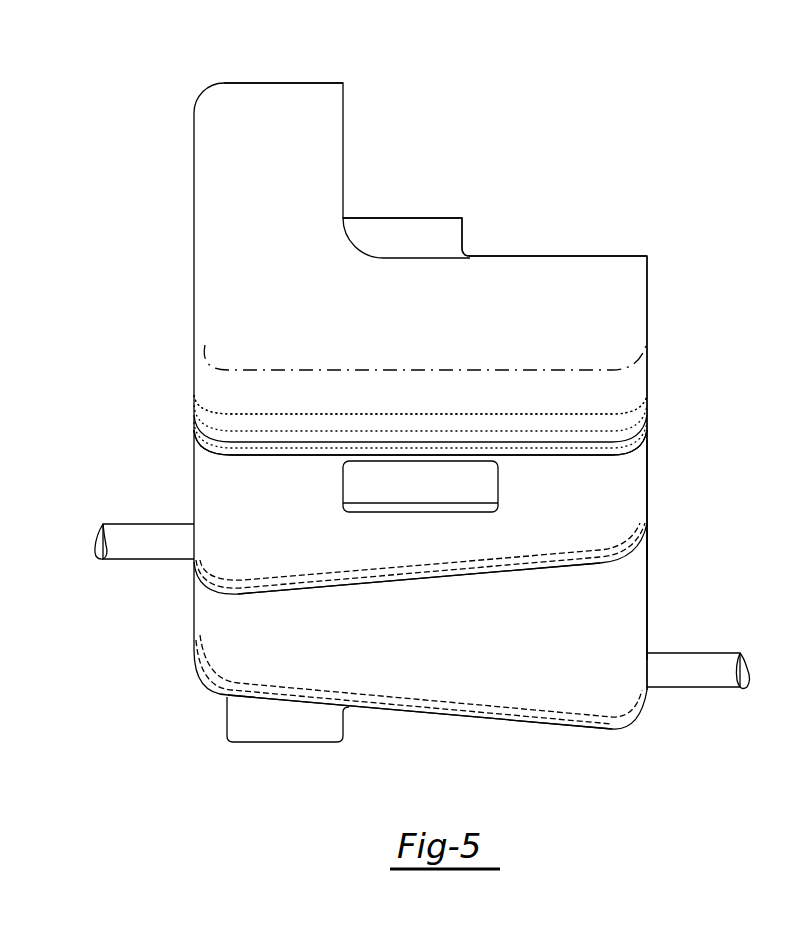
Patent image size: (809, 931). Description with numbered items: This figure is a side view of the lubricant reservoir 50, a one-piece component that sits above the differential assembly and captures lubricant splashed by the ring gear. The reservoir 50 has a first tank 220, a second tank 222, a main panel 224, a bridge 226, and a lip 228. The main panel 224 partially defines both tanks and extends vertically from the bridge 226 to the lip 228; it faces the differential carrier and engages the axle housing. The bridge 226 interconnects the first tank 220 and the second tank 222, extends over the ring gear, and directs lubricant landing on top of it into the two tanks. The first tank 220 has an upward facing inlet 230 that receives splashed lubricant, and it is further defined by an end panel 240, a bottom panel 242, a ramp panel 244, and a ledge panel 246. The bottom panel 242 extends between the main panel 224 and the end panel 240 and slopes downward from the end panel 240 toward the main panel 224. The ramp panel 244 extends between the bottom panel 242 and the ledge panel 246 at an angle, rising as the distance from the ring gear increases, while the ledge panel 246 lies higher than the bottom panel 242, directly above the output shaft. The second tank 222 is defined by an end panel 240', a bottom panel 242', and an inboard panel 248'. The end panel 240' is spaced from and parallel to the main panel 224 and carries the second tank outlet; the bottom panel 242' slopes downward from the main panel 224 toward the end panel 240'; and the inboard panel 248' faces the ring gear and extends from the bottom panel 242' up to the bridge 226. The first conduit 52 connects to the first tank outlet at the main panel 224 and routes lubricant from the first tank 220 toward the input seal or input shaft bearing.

The lubricant reservoir 50 is at (198, 99).
The first conduit 52 is at (146, 523).
The first tank 220 is at (654, 287).
The second tank 222 is at (640, 723).
The main panel 224 is at (193, 397).
The bridge 226 is at (403, 217).
The lip 228 is at (312, 82).
The upward facing inlet 230 is at (578, 253).
The end panel 240 is at (716, 496).
The end panel 240' is at (719, 595).
The bottom panel 242 is at (419, 592).
The bottom panel 242' is at (420, 728).
The ramp panel 244 is at (441, 553).
The ledge panel 246 is at (302, 456).
The inboard panel 248' is at (420, 675).